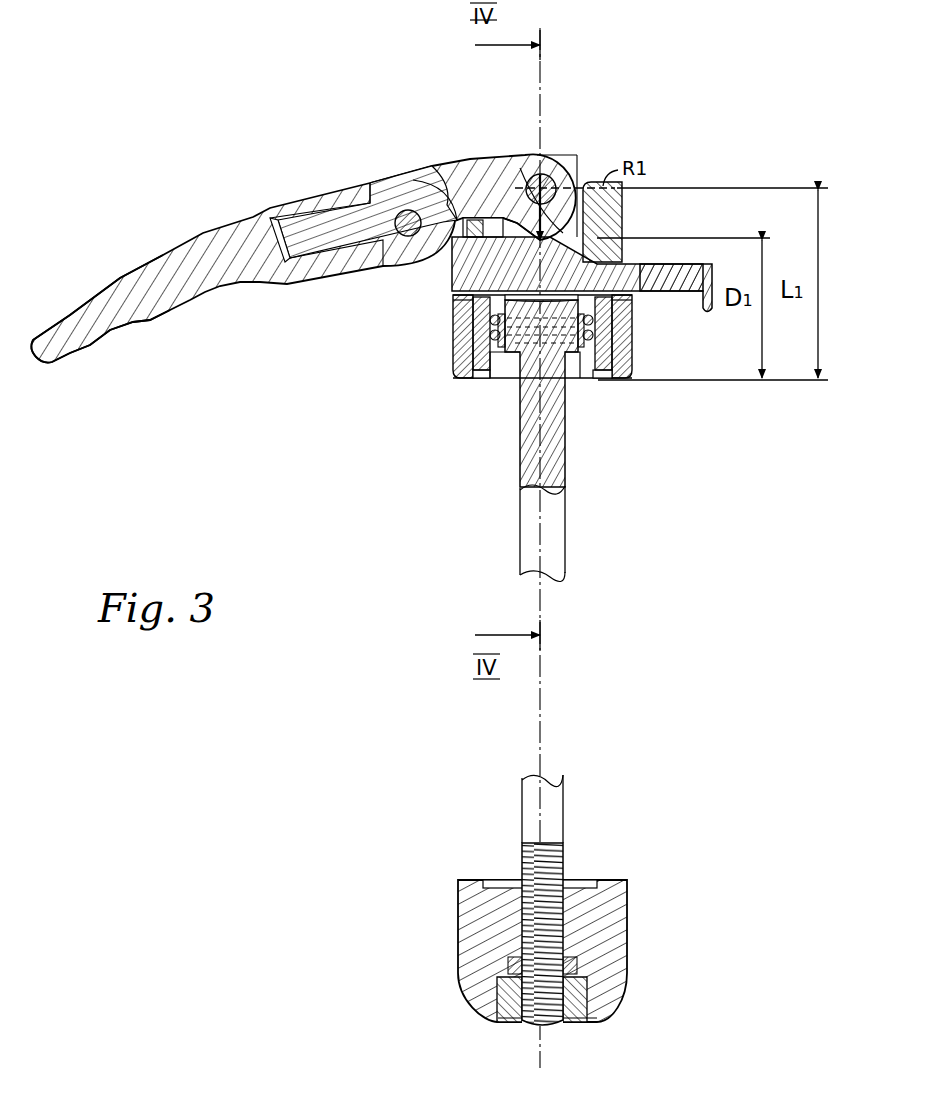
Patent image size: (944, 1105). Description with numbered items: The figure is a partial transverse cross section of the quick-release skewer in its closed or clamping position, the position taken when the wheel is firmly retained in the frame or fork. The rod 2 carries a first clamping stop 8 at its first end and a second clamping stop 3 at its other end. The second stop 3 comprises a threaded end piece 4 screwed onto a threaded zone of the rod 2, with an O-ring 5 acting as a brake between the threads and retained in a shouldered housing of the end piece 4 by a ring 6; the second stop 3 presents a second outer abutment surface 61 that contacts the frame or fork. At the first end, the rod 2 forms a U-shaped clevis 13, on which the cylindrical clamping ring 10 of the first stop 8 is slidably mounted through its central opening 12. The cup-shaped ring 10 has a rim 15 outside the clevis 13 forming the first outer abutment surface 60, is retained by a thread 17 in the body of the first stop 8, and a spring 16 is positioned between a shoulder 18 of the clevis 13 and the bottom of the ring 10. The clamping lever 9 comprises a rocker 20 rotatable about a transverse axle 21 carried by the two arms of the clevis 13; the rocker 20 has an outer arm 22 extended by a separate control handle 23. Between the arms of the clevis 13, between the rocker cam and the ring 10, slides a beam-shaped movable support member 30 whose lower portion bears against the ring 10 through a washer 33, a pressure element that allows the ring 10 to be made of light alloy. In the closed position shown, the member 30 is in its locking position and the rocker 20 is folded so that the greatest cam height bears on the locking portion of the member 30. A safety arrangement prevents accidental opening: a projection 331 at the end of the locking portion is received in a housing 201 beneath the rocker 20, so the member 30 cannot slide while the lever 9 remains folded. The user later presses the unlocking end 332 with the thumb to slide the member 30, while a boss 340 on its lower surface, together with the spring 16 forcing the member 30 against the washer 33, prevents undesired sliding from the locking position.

The rod 2 is at (560, 545).
The second clamping stop 3 is at (522, 911).
The threaded end piece 4 is at (625, 913).
The O-ring 5 is at (620, 965).
The ring 6 is at (625, 1000).
The first clamping stop 8 is at (618, 136).
The clamping lever 9 is at (213, 216).
The clamping ring 10 is at (622, 338).
The central opening 12 is at (618, 302).
The clevis 13 is at (508, 370).
The rim 15 is at (465, 384).
The spring 16 is at (465, 330).
The thread 17 is at (462, 352).
The shoulder 18 is at (612, 357).
The rocker 20 is at (478, 165).
The transverse pin or axle 21 is at (512, 156).
The outer arm 22 is at (315, 226).
The control handle 23 is at (160, 265).
The movable support member 30 is at (462, 264).
The washer 33 is at (458, 300).
The first outer abutment surface 60 is at (605, 384).
The second outer abutment surface 61 is at (606, 870).
The housing 201 is at (478, 176).
The projection 331 is at (400, 205).
The unlocking end 332 is at (706, 280).
The boss 340 is at (637, 262).